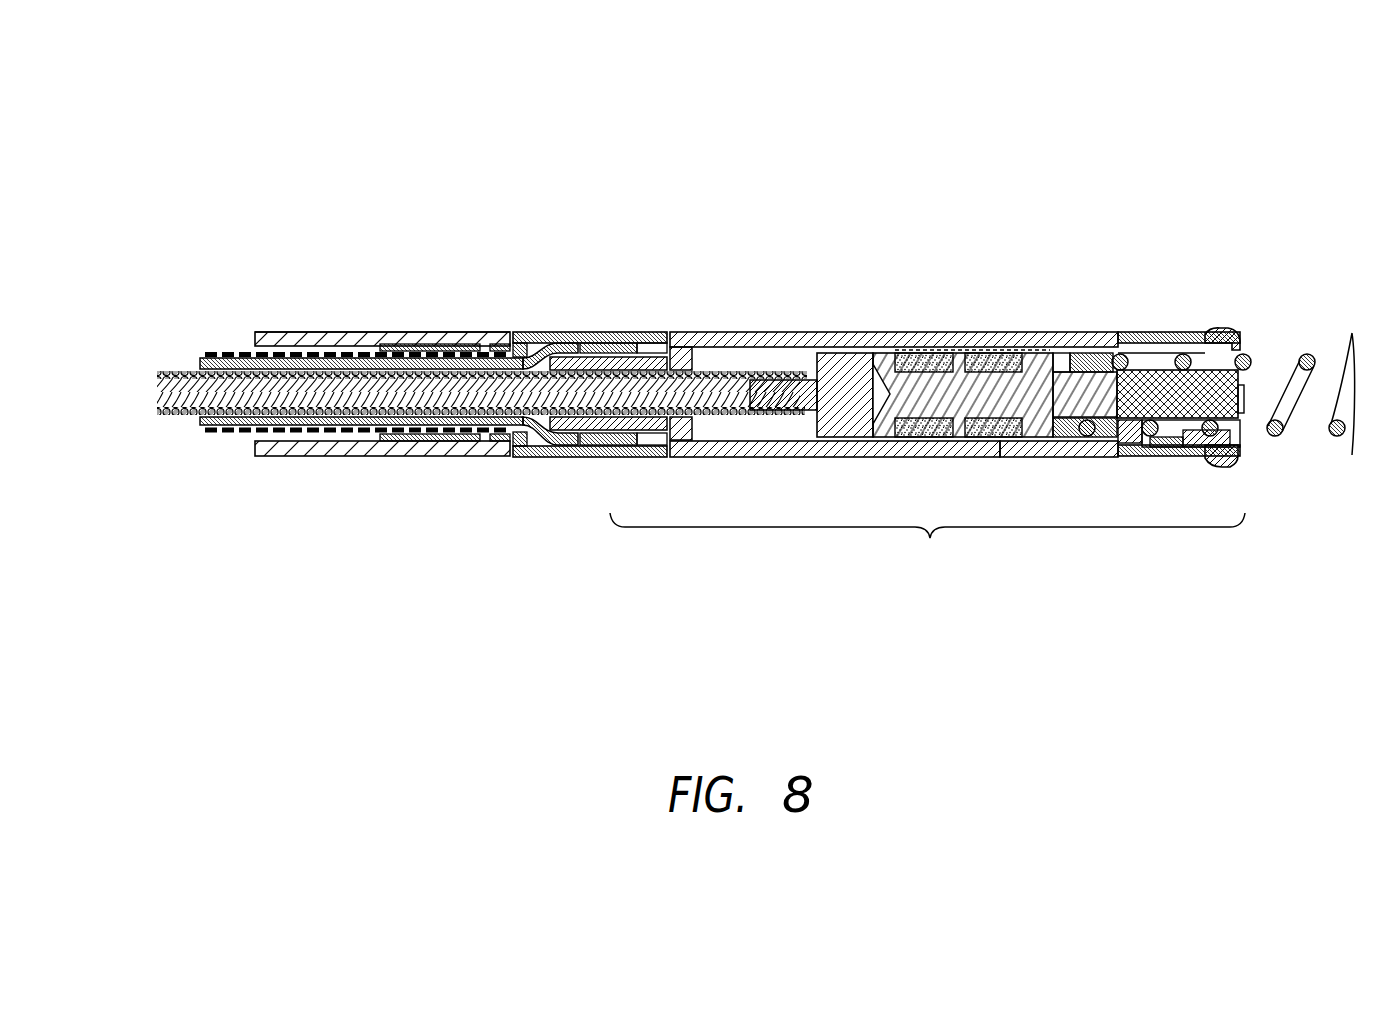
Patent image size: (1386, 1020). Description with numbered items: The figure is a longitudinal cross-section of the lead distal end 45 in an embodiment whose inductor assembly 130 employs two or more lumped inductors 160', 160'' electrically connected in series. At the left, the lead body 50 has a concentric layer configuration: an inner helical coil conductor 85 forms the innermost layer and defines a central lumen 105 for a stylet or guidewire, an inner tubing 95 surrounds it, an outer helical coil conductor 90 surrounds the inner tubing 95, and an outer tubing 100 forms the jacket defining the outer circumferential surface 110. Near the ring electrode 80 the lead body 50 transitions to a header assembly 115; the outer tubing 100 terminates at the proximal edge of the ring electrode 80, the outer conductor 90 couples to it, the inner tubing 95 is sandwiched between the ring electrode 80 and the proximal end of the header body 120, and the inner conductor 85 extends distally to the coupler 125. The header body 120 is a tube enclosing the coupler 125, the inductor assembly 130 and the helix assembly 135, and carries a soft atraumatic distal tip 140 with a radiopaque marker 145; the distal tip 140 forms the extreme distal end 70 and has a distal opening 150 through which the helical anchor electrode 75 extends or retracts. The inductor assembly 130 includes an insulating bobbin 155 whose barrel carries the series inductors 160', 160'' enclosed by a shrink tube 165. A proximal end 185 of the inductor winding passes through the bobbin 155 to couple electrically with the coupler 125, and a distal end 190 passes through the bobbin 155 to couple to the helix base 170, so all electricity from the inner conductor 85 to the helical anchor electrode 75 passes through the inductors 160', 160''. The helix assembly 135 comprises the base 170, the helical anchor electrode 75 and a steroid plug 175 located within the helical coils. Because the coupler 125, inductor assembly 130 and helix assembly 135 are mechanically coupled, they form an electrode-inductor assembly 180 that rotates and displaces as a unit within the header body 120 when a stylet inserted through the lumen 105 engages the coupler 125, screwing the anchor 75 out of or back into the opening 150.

The lead distal end 45 is at (1195, 177).
The lead body 50 is at (268, 506).
The distal tip 70 is at (1225, 460).
The helical anchor electrode 75 is at (1308, 354).
The ring electrode 80 is at (540, 333).
The inner helical coil conductor 85 is at (180, 372).
The outer helical coil conductor 90 is at (225, 352).
The inner tubing 95 is at (200, 353).
The outer tubing 100 is at (255, 333).
The central lumen 105 is at (140, 393).
The outer circumferential surface 110 is at (330, 457).
The header assembly 115 is at (927, 542).
The header body 120 is at (715, 333).
The coupler 125 is at (783, 333).
The inductor assembly 130 is at (935, 443).
The helix assembly 135 is at (1132, 470).
The soft atraumatic distal tip 140 is at (1217, 330).
The radiopaque marker 145 is at (1140, 333).
The distal opening 150 is at (1253, 395).
The bobbin 155 is at (862, 333).
The lumped inductor 160' is at (943, 343).
The lumped inductor 160'' is at (1027, 343).
The shrink tube 165 is at (990, 333).
The helix base 170 is at (1095, 333).
The steroid plug 175 is at (1242, 420).
The electrode-inductor assembly 180 is at (1080, 290).
The proximal end of coil inductor 185 is at (898, 333).
The distal end of coil inductor 190 is at (1036, 443).